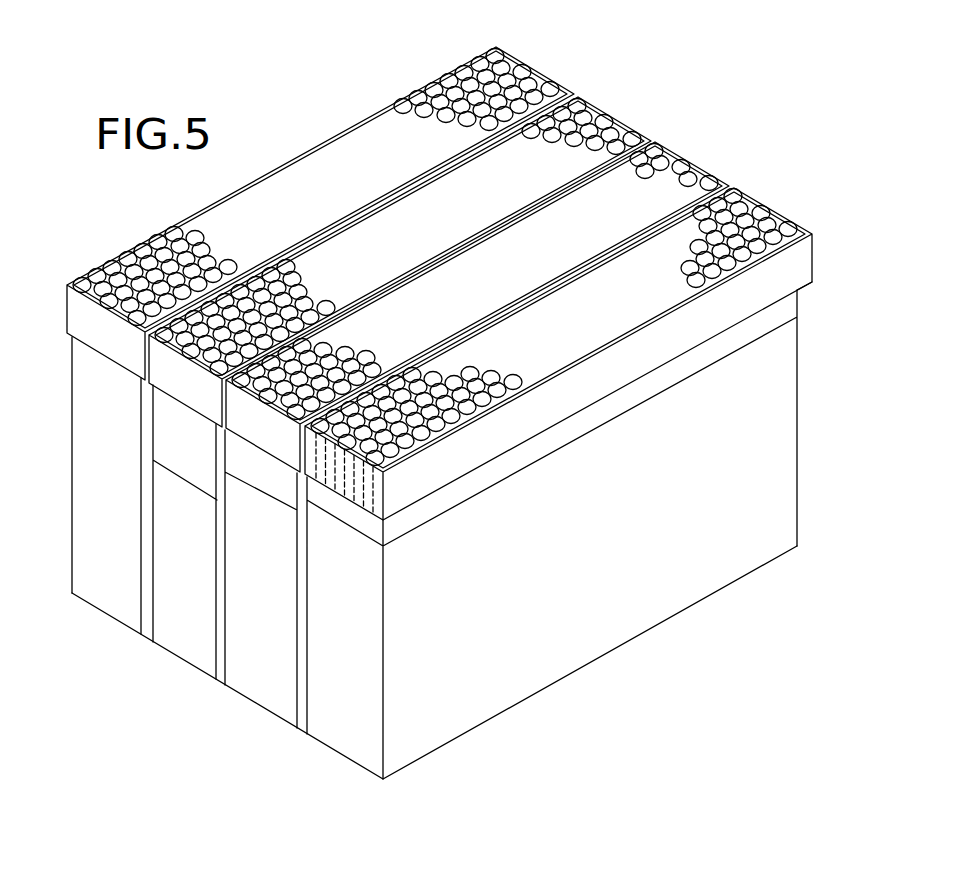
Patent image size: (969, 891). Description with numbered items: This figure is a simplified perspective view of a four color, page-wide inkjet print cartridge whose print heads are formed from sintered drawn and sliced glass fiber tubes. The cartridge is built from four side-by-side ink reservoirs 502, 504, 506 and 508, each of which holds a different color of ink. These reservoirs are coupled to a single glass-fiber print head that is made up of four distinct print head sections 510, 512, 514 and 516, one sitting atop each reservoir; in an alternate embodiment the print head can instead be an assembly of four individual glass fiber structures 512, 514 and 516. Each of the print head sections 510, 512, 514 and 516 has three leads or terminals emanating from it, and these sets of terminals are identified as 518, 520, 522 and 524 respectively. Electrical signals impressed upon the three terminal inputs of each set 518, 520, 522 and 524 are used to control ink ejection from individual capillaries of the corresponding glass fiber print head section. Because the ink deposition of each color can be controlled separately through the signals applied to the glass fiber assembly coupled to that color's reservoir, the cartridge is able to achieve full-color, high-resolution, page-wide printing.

The ink reservoir 502 is at (112, 603).
The ink reservoir 504 is at (187, 645).
The ink reservoir 506 is at (258, 692).
The ink reservoir 508 is at (347, 742).
The print head section 510 is at (73, 306).
The print head section 512 is at (190, 383).
The print head section 514 is at (273, 442).
The print head section 516 is at (352, 488).
The set of three leads or terminals 518 is at (525, 75).
The set of three leads or terminals 520 is at (637, 130).
The set of three leads or terminals 522 is at (700, 172).
The set of three leads or terminals 524 is at (795, 228).